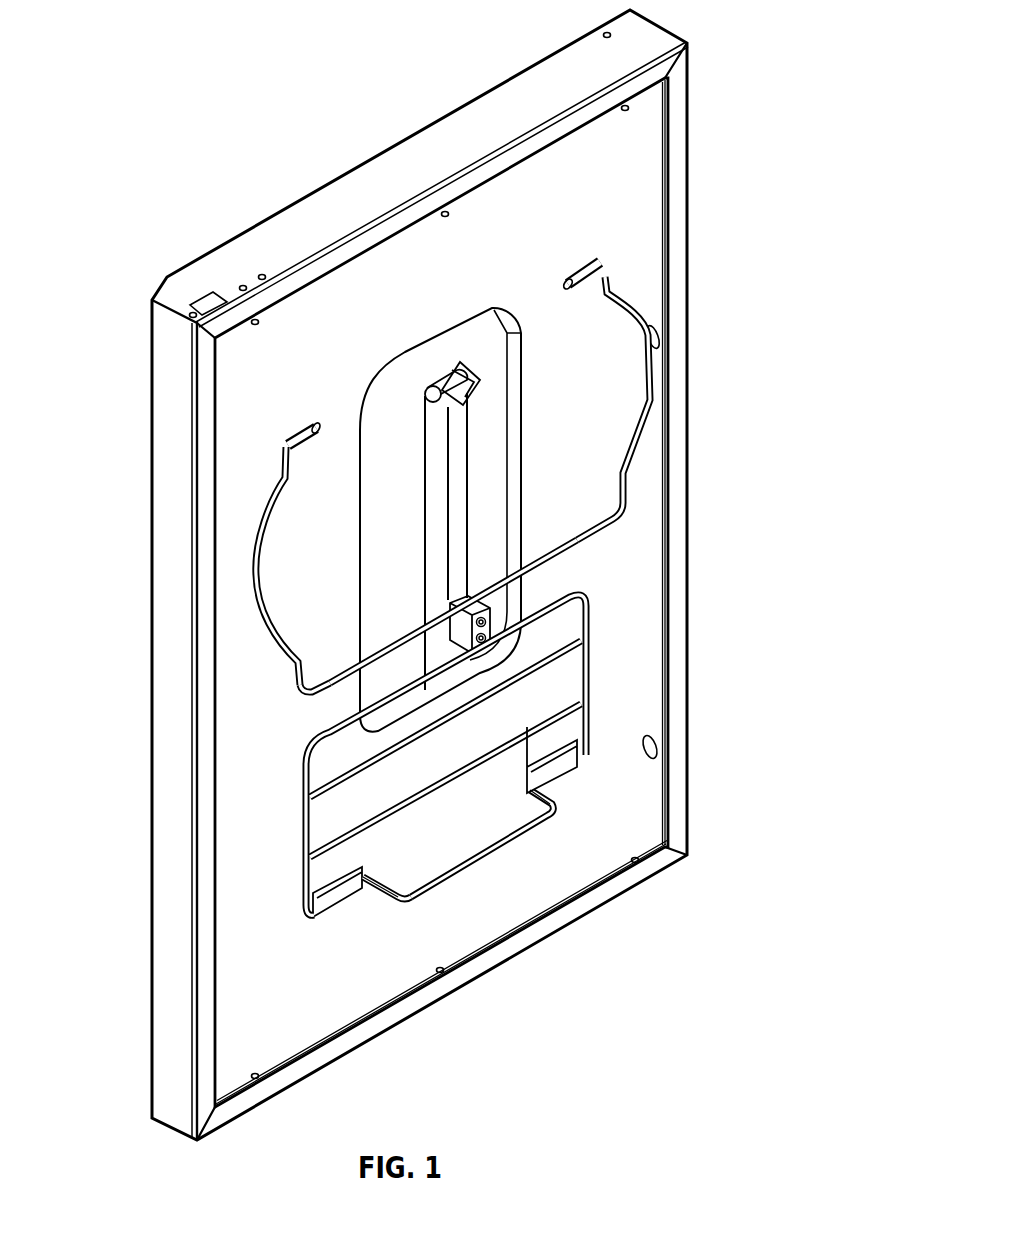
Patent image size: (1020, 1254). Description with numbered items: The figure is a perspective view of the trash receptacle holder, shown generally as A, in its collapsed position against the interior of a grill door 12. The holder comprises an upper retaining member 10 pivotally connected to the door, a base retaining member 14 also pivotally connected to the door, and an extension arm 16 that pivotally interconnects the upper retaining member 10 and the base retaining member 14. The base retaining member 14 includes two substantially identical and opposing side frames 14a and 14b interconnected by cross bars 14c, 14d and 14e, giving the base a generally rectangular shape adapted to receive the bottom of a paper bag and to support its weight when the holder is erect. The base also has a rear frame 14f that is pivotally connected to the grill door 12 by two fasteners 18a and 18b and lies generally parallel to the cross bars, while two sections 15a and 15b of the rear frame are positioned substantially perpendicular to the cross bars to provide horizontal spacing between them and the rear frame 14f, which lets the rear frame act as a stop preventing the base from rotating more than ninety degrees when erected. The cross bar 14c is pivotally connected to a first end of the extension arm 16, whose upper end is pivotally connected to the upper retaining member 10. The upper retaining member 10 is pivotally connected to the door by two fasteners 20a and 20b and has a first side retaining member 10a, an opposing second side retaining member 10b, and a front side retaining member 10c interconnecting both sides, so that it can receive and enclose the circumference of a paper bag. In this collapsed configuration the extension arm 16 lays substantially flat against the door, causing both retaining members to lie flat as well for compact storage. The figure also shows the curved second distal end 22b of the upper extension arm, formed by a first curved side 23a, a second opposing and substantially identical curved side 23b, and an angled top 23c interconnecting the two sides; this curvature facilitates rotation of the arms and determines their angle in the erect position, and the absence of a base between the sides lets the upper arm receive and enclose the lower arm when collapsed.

The upper retaining member 10 is at (414, 433).
The first side retaining member 10a is at (642, 432).
The second side retaining member 10b is at (256, 580).
The front side retaining member 10c is at (313, 696).
The grill door 12 is at (243, 410).
The base retaining member 14 is at (414, 860).
The side frame 14a is at (585, 667).
The side frame 14b is at (307, 887).
The cross bar 14c is at (313, 738).
The cross bar 14d is at (320, 790).
The cross bar 14e is at (317, 855).
The rear frame 14f is at (479, 868).
The section of rear frame 15a is at (563, 775).
The section of rear frame 15b is at (368, 897).
The extension arm 16 is at (532, 346).
The fastener 18a is at (330, 893).
The fastener 18b is at (565, 762).
The fastener 20a is at (310, 423).
The fastener 20b is at (589, 262).
The second distal end 22b is at (445, 333).
The first curved side 23a is at (462, 363).
The second curved side 23b is at (446, 372).
The angled top 23c is at (482, 382).
The invention A is at (758, 499).